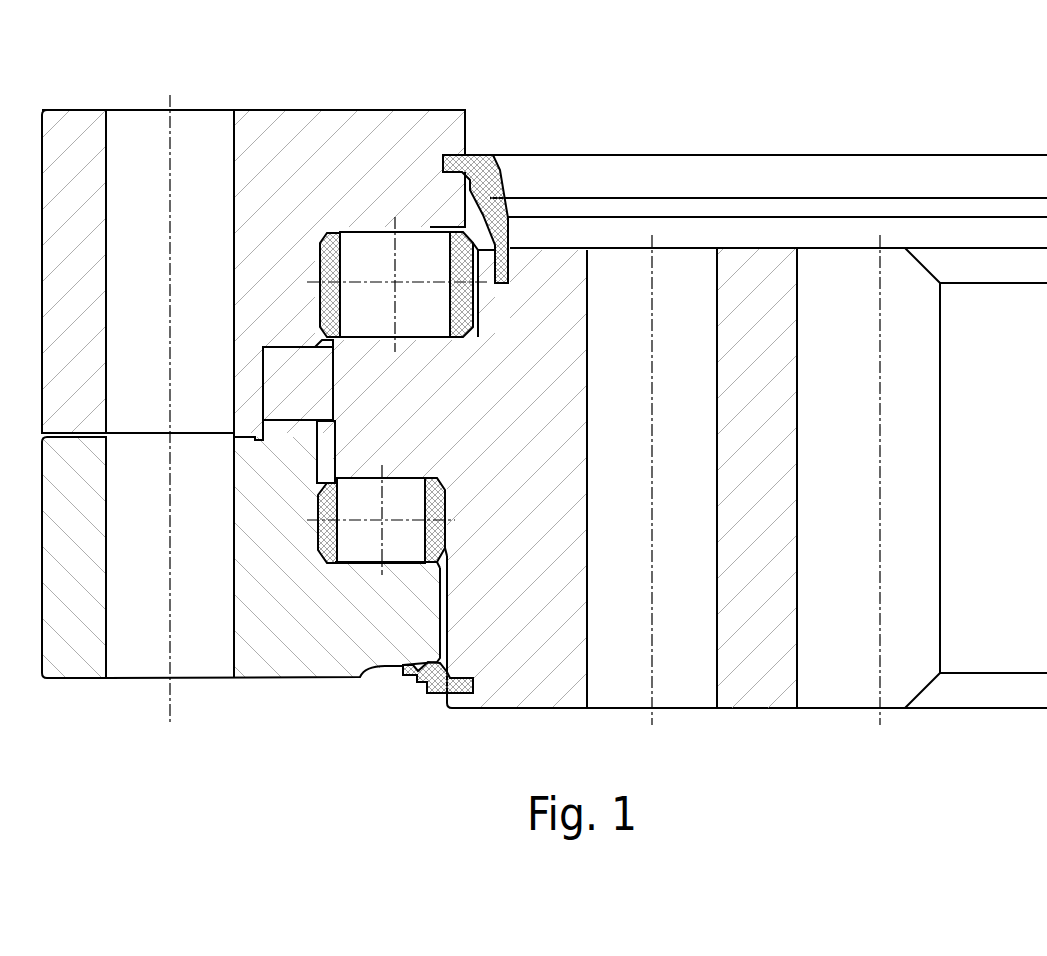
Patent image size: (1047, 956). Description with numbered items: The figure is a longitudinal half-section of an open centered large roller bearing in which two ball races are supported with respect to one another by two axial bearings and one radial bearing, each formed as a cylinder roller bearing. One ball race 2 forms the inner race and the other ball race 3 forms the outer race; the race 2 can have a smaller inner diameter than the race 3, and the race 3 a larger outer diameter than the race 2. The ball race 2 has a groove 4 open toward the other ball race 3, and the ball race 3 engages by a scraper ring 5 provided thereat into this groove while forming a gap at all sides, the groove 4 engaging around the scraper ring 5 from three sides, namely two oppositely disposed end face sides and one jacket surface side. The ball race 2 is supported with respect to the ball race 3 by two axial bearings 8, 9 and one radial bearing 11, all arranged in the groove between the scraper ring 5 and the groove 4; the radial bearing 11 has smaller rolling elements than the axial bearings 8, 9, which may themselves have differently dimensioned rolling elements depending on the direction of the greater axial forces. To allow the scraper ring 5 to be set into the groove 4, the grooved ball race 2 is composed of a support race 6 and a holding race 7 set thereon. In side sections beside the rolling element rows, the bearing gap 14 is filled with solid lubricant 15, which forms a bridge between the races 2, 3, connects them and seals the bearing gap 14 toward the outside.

The ball race 2 is at (253, 643).
The ball race 3 is at (757, 690).
The groove 4 is at (331, 228).
The scraper ring 5 is at (415, 245).
The support race 6 is at (83, 653).
The holding race 7 is at (75, 130).
The axial bearing 8 is at (360, 550).
The axial bearing 9 is at (458, 237).
The radial bearing 11 is at (285, 368).
The bearing gap 14 is at (325, 236).
The solid lubricant 15 is at (367, 357).